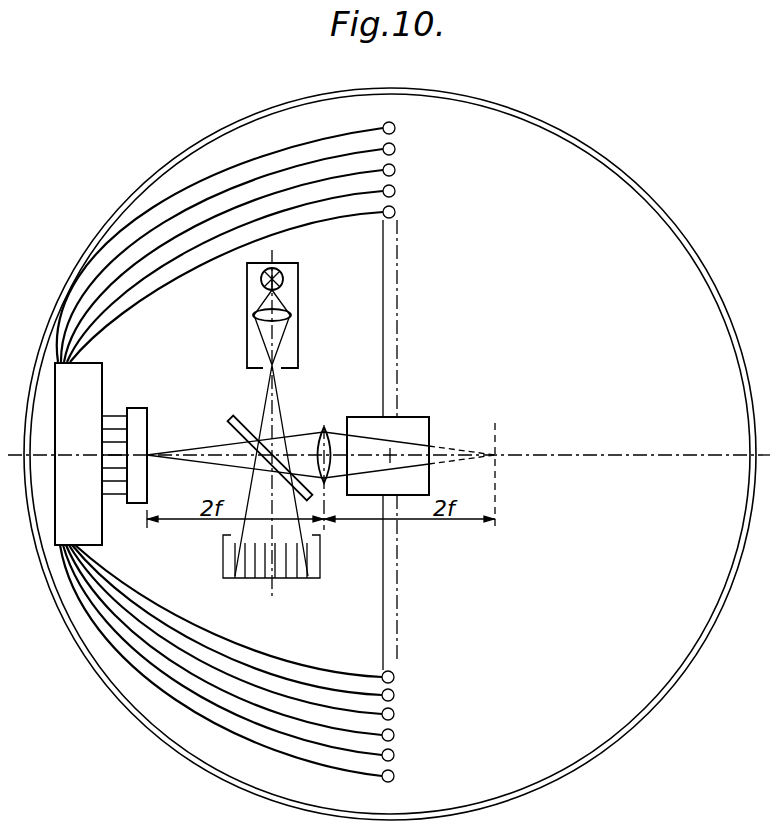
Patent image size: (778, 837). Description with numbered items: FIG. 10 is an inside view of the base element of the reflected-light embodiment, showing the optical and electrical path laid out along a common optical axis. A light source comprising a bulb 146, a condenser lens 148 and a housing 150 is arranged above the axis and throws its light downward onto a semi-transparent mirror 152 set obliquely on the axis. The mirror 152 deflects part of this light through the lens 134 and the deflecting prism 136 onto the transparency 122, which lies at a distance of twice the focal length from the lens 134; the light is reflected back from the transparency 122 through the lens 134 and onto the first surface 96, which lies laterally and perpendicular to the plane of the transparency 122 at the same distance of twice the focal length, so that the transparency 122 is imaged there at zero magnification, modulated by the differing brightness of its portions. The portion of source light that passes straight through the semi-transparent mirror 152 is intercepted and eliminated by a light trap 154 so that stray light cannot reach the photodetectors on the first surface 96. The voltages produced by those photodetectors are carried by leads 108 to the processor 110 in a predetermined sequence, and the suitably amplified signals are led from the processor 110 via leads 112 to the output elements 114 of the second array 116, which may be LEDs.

The processor 110 is at (96, 436).
The leads 108 is at (118, 411).
The first surface 96 is at (143, 421).
The bulb 146 is at (283, 277).
The condenser lens 148 is at (292, 312).
The housing 150 is at (298, 352).
The semi-transparent mirror 152 is at (238, 421).
The lens 134 is at (325, 426).
The deflecting prism 136 is at (422, 433).
The transparency 122 is at (498, 427).
The second array 116 is at (400, 309).
The leads 112 is at (289, 664).
The output elements 114 is at (395, 676).
The light trap 154 is at (258, 582).